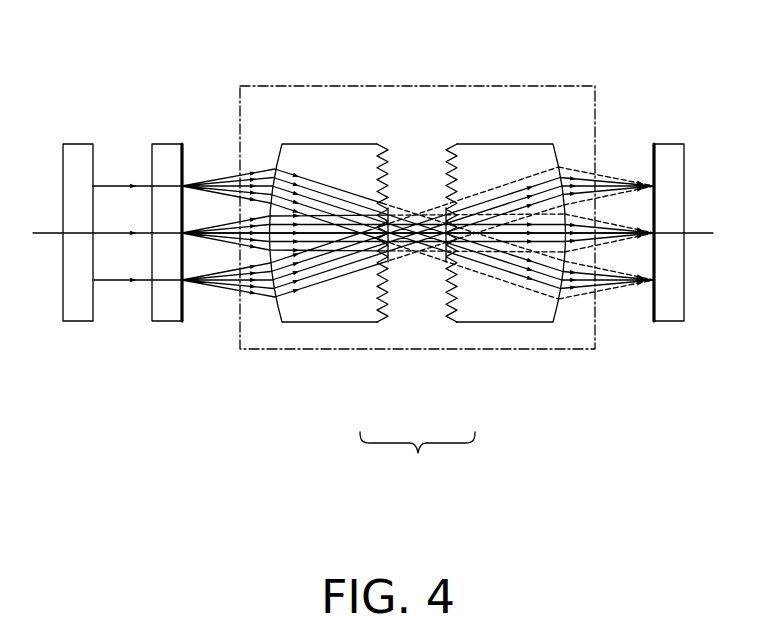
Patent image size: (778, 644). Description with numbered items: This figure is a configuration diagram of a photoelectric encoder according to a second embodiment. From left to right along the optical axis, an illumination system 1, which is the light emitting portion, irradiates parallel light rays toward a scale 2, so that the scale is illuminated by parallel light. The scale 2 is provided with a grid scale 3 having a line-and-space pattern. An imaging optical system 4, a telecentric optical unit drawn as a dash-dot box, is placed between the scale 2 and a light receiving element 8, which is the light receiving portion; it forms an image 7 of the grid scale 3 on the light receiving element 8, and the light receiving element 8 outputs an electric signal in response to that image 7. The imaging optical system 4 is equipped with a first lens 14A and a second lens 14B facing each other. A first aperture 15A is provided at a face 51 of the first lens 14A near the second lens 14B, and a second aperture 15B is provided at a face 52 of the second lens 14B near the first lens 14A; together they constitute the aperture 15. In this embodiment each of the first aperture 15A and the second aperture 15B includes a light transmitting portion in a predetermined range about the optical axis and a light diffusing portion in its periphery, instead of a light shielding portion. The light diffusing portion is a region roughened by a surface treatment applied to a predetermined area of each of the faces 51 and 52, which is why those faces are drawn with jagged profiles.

The illumination system 1 is at (63, 143).
The scale 2 is at (152, 143).
The grid scale 3 is at (184, 160).
The imaging optical system 4 is at (270, 85).
The image 7 is at (653, 160).
The light receiving element 8 is at (685, 143).
The first lens 14A is at (343, 160).
The second lens 14B is at (517, 160).
The aperture 15 is at (417, 457).
The first aperture 15A is at (386, 288).
The second aperture 15B is at (448, 288).
The face 51 is at (387, 308).
The face 52 is at (449, 308).